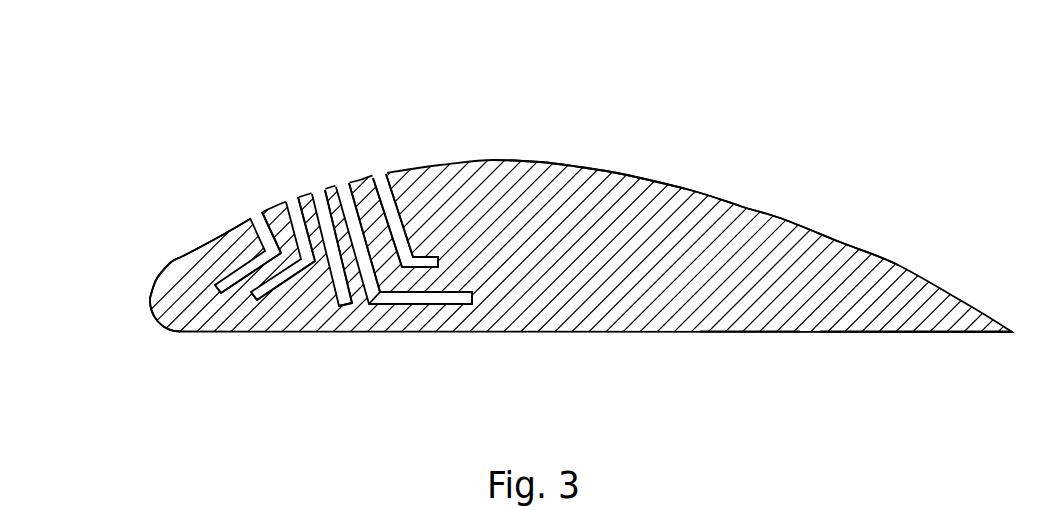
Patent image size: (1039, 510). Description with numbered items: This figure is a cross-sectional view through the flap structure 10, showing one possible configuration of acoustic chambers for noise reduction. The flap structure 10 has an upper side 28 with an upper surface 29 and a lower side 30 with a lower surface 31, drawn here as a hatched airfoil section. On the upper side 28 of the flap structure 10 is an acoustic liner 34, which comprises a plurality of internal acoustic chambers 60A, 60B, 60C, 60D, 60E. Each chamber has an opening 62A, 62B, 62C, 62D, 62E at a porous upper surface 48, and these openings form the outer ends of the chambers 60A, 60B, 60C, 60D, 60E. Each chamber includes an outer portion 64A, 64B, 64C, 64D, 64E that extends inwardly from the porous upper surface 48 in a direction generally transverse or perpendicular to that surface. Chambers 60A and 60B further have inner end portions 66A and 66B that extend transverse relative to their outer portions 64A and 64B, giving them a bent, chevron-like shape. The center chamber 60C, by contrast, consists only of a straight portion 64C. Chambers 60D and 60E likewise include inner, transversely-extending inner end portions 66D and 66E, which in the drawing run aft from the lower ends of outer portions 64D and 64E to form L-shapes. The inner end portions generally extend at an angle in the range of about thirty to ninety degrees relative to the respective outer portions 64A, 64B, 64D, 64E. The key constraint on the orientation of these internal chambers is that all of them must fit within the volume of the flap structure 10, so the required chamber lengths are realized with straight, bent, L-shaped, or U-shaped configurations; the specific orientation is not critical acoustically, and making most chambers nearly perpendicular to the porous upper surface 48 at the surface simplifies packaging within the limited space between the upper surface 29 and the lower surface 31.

The flap structure 10 is at (908, 254).
The upper side 28 is at (698, 191).
The upper surface 29 is at (780, 218).
The lower side 30 is at (747, 332).
The lower surface 31 is at (868, 332).
The acoustic liner 34 is at (226, 217).
The porous upper surface 48 is at (192, 249).
The acoustic chamber 60A is at (252, 215).
The acoustic chamber 60B is at (284, 207).
The center chamber 60C is at (314, 191).
The acoustic chamber 60D is at (341, 185).
The acoustic chamber 60E is at (373, 174).
The opening 62A is at (260, 214).
The opening 62B is at (290, 200).
The opening 62C is at (324, 188).
The opening 62D is at (353, 182).
The opening 62E is at (382, 172).
The outer portion 64A is at (217, 283).
The outer portion 64B is at (221, 292).
The straight portion 64C is at (328, 308).
The outer portion 64D is at (372, 303).
The outer portion 64E is at (427, 247).
The inner end portion 66A is at (238, 283).
The inner end portion 66B is at (271, 294).
The inner end portion 66D is at (443, 305).
The inner end portion 66E is at (393, 207).